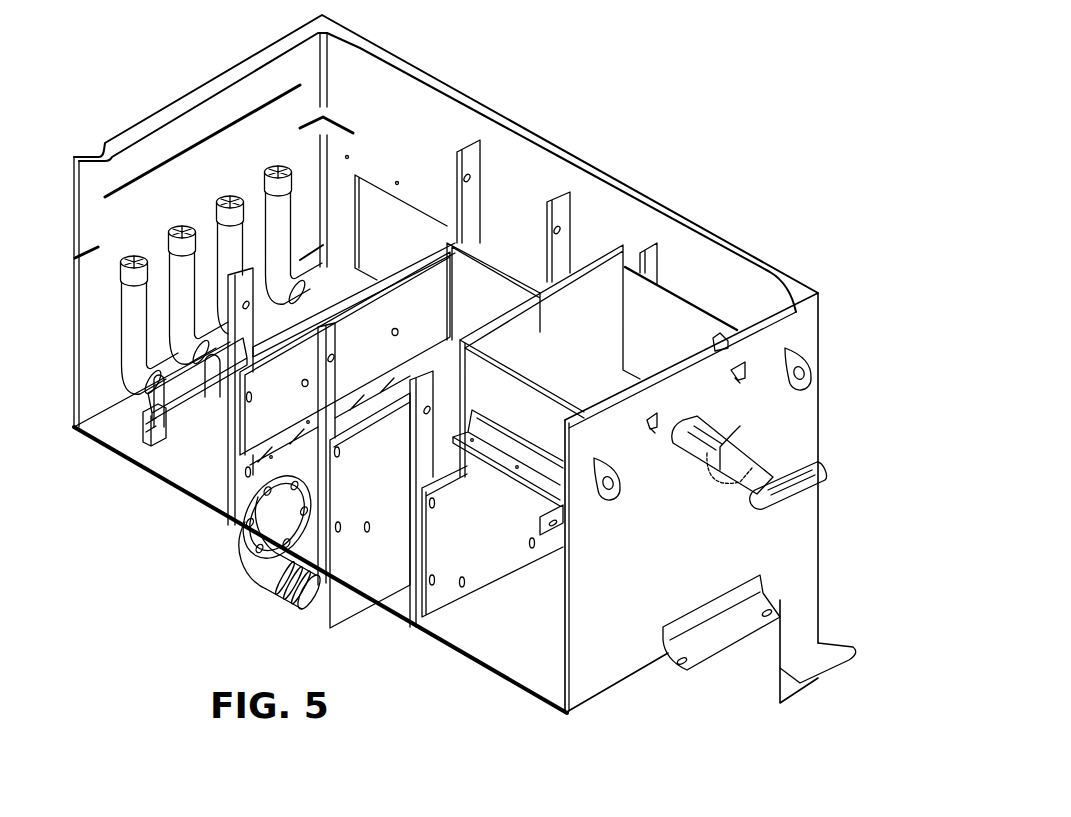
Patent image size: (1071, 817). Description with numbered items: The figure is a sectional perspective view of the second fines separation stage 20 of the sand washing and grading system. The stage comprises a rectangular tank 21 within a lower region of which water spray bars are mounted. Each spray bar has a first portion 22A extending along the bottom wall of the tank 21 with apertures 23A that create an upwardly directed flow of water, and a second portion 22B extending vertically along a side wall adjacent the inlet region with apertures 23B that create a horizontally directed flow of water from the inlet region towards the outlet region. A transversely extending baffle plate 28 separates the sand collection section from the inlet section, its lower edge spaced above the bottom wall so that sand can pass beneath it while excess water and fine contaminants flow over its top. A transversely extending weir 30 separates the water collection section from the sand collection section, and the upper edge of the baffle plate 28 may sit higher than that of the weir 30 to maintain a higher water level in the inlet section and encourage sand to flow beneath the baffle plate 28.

The second fines separation stage 20 is at (777, 230).
The rectangular tank 21 is at (617, 187).
The first portion 22A is at (192, 412).
The second portion 22B is at (133, 305).
The apertures 23A is at (213, 420).
The apertures 23B is at (297, 213).
The baffle plate 28 is at (405, 268).
The weir 30 is at (352, 482).